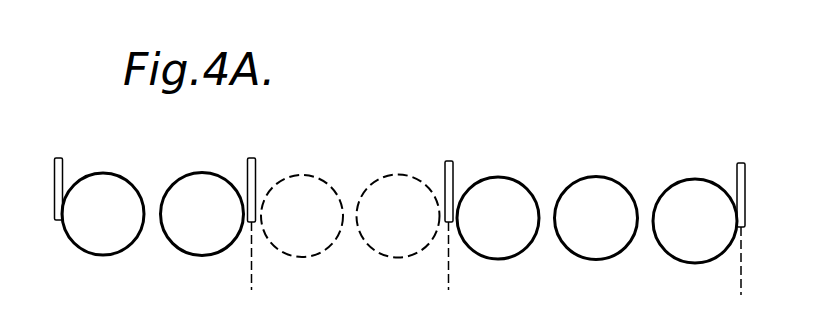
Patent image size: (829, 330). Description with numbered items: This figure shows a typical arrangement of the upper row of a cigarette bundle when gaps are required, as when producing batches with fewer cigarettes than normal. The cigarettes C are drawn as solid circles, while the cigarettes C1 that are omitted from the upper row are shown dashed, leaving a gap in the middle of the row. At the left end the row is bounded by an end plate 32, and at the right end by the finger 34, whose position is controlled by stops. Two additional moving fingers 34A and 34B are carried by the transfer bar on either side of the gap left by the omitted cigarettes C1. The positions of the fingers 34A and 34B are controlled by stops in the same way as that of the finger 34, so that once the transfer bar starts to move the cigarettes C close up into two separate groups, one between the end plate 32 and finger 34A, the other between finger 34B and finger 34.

The end plate 32 is at (55, 182).
The additional moving finger 34A is at (255, 168).
The additional moving finger 34B is at (450, 168).
The finger 34 is at (745, 168).
The cigarettes C is at (177, 182).
The omitted cigarettes C1 is at (322, 179).